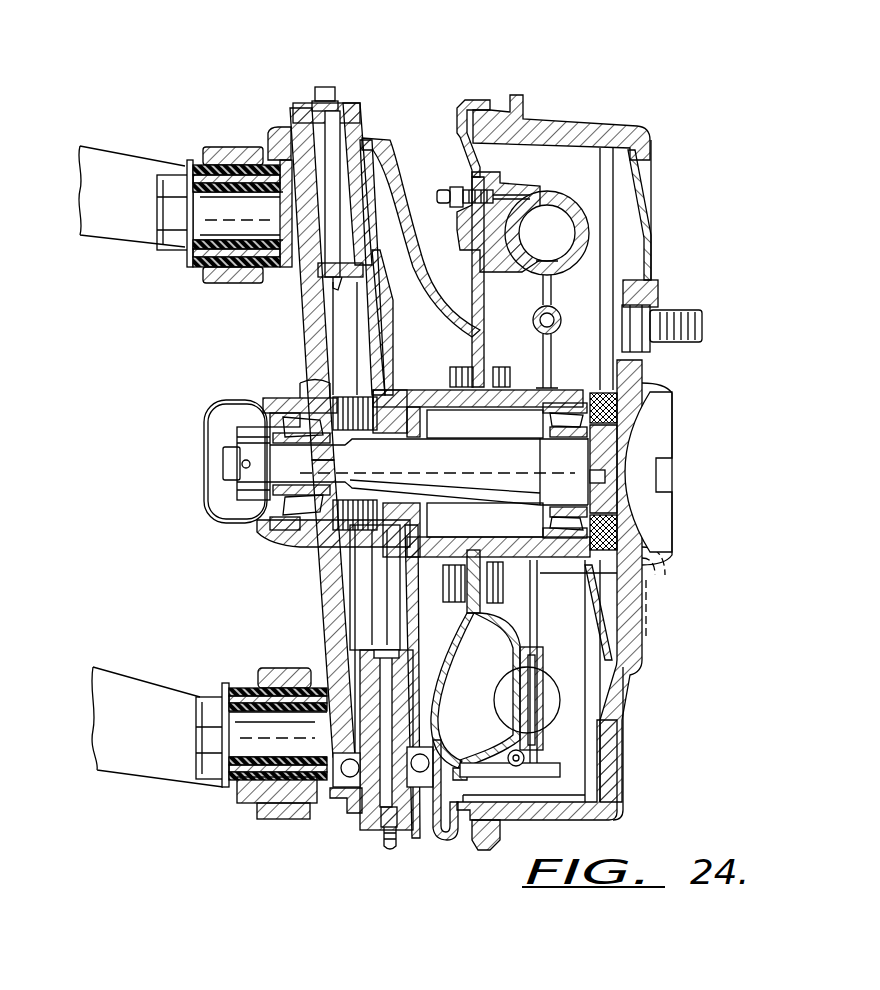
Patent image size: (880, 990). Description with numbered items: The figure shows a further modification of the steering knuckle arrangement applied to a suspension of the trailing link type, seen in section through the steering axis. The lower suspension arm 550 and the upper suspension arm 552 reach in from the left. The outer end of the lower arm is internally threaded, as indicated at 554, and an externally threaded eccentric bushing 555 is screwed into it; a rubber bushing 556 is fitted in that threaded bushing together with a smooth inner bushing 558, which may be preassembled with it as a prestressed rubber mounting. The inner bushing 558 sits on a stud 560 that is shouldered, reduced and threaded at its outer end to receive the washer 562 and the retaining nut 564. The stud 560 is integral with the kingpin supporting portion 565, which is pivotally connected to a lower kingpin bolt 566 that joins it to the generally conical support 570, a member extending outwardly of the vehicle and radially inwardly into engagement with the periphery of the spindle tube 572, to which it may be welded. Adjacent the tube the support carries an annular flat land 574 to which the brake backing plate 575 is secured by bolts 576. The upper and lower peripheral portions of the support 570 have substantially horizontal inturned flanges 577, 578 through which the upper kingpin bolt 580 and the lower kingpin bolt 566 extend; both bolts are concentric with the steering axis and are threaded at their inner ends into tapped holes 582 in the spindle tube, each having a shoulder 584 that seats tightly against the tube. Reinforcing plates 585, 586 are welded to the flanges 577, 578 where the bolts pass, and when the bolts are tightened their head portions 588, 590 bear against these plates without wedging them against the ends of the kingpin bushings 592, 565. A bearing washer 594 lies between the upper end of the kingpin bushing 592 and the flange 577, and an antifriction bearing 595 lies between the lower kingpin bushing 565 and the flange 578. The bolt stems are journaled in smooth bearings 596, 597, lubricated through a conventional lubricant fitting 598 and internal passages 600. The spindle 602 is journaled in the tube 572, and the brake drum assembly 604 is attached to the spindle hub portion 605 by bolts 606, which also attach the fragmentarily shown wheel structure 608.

The lower suspension arm 550 is at (291, 668).
The upper suspension arm 552 is at (205, 150).
The internal thread 554 is at (281, 808).
The eccentric bushing 555 is at (250, 790).
The rubber bushing 556 is at (263, 713).
The smooth bushing 558 is at (305, 752).
The stud 560 is at (232, 724).
The washer 562 is at (227, 684).
The retaining nut 564 is at (214, 703).
The kingpin supporting portion 565 is at (333, 580).
The kingpin bolt 566 is at (360, 594).
The conical support 570 is at (450, 665).
The spindle tube 572 is at (505, 408).
The annular flat land 574 is at (474, 352).
The brake backing plate 575 is at (488, 343).
The bolts 576 is at (512, 372).
The upper inturned flange 577 is at (372, 140).
The lower inturned flange 578 is at (347, 808).
The upper kingpin bolt 580 is at (293, 108).
The tapped hole 582 is at (500, 403).
The shoulder 584 is at (349, 385).
The reinforcing plate 585 is at (362, 128).
The reinforcing plate 586 is at (423, 840).
The head portion 588 is at (353, 103).
The head portion 590 is at (371, 830).
The kingpin bushing 592 is at (297, 302).
The bearing washer 594 is at (290, 152).
The antifriction bearing 595 is at (338, 792).
The smooth bearing 596 is at (362, 178).
The smooth bearing 597 is at (382, 343).
The lubricant fitting 598 is at (322, 88).
The internal passages 600 is at (338, 240).
The spindle 602 is at (440, 476).
The brake drum assembly 604 is at (656, 218).
The spindle hub portion 605 is at (672, 420).
The bolts 606 is at (700, 312).
The wheel structure 608 is at (650, 292).